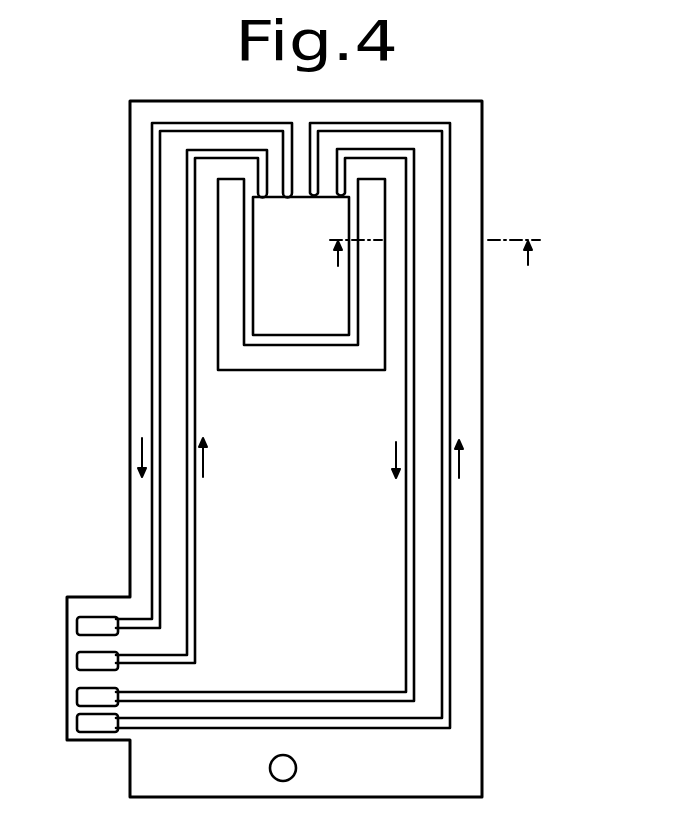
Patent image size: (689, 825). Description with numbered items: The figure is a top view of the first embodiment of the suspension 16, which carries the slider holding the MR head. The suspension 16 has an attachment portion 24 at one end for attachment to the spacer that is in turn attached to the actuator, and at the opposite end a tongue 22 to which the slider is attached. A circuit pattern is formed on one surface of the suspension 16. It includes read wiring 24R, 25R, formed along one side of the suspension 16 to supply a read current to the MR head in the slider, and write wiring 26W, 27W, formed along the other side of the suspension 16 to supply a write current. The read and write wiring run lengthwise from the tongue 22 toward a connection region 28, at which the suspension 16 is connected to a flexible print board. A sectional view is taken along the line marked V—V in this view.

The suspension 16 is at (324, 448).
The tongue 22 is at (313, 308).
The attachment portion 24 is at (363, 765).
The read wiring 24R is at (184, 330).
The read wiring 25R is at (152, 397).
The write wiring 26W is at (450, 408).
The write wiring 27W is at (413, 490).
The connection region 28 is at (92, 603).